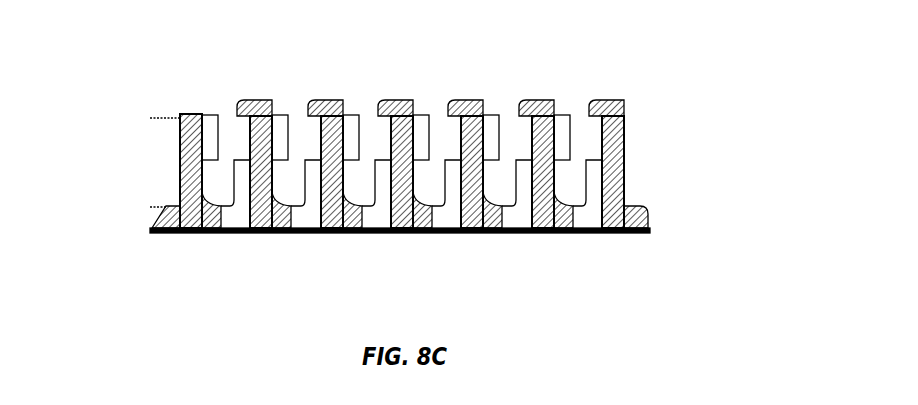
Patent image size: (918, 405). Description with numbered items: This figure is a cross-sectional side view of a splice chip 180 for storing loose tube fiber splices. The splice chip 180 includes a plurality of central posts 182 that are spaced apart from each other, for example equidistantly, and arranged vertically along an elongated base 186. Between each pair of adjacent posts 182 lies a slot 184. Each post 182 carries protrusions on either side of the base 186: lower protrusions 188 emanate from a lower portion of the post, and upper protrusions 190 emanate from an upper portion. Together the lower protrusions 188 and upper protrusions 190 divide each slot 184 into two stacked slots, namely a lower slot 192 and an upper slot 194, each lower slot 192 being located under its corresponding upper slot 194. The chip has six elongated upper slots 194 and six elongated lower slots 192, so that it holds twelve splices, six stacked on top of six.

The splice chip 180 is at (122, 135).
The central post 182 is at (258, 135).
The slot 184 is at (220, 165).
The elongated base 186 is at (240, 218).
The lower protrusion 188 is at (448, 182).
The upper protrusion 190 is at (427, 127).
The lower slot 192 is at (567, 183).
The upper slot 194 is at (580, 138).